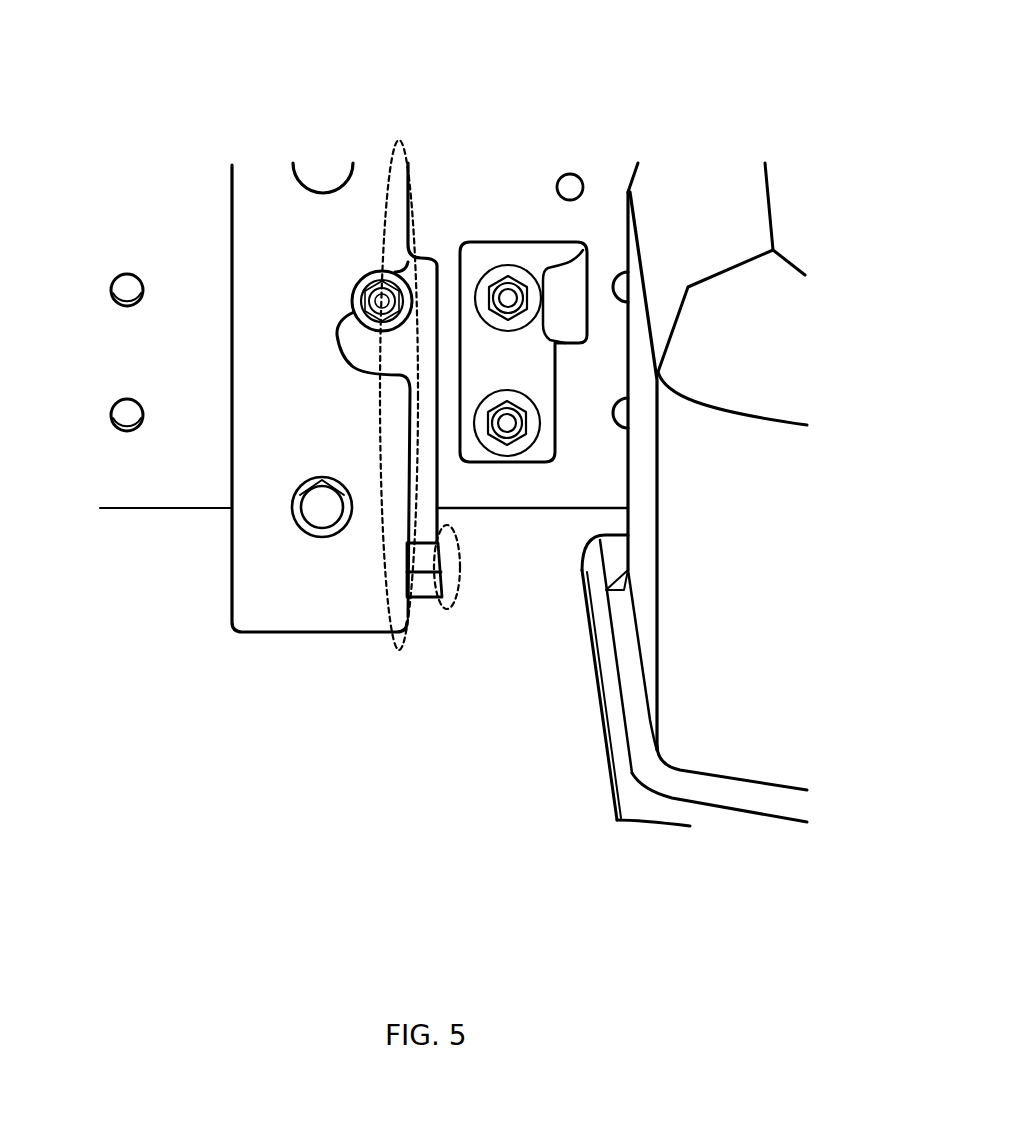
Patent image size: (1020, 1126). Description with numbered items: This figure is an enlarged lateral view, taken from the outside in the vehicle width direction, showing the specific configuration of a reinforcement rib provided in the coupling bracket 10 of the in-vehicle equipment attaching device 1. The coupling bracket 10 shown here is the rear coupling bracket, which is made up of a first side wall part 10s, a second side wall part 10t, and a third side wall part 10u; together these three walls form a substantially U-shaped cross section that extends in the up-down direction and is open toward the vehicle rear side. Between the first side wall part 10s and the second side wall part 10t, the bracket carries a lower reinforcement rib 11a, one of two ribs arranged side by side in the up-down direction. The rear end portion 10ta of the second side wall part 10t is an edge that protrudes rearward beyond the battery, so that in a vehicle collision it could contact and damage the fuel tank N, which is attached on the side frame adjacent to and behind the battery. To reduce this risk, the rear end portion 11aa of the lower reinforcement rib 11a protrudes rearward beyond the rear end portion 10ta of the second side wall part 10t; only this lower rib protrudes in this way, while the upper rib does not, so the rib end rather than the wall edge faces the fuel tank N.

The in-vehicle equipment attaching device 1 is at (612, 68).
The coupling bracket 10 is at (495, 113).
The third side wall part 10u is at (228, 243).
The second side wall part 10t is at (352, 247).
The rear end portion of second side wall part 10ta is at (400, 652).
The first side wall part 10s is at (424, 280).
The lower reinforcement rib 11a is at (423, 583).
The rear end portion of lower reinforcement rib 11aa is at (458, 578).
The fuel tank N is at (723, 733).